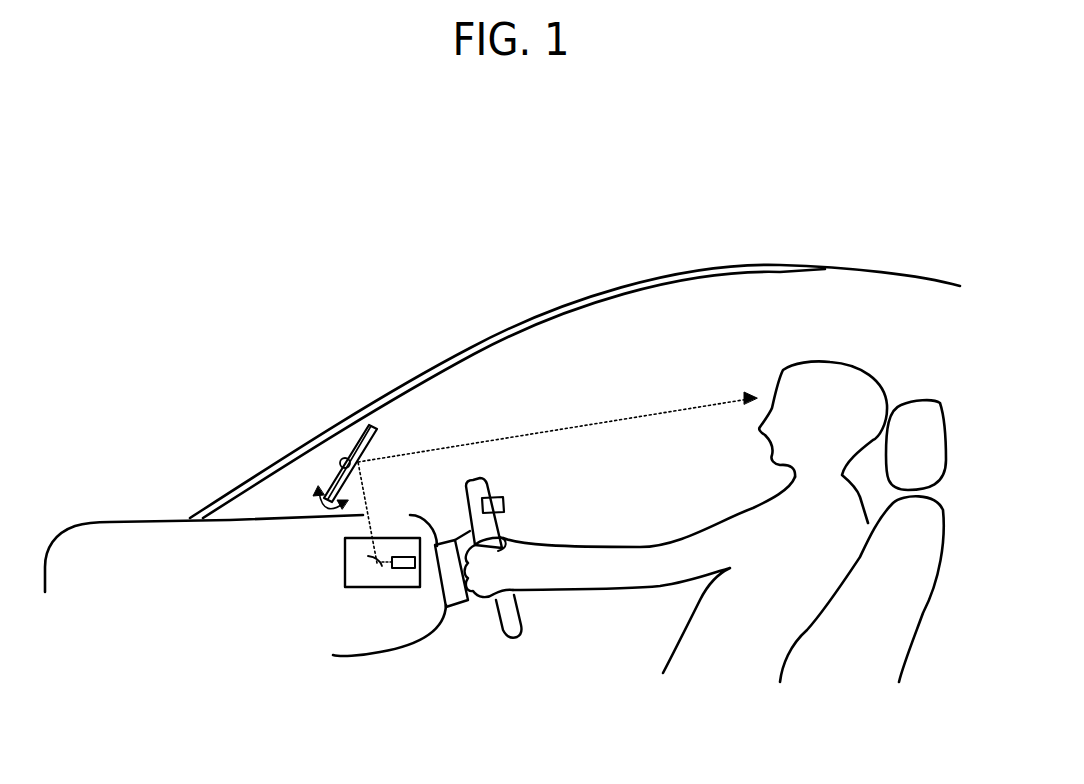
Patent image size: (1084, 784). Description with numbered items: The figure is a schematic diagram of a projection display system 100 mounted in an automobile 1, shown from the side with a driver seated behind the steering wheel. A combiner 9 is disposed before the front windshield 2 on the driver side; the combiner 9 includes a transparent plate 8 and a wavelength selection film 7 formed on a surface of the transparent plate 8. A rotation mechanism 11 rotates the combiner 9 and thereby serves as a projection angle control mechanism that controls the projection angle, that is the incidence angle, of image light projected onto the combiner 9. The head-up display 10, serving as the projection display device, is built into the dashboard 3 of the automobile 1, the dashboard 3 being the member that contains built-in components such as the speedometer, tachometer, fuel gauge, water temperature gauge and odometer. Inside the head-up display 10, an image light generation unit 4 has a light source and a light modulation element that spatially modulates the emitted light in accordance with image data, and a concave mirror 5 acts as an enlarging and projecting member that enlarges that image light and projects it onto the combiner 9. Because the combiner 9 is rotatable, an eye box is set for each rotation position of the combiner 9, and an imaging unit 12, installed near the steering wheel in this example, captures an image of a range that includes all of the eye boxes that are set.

The automobile 1 is at (740, 263).
The front windshield 2 is at (553, 308).
The projection display system 100 is at (393, 484).
The dashboard 3 is at (437, 627).
The image light generation unit 4 is at (398, 568).
The concave mirror 5 is at (368, 563).
The wavelength selection film 7 is at (368, 455).
The transparent plate 8 is at (367, 443).
The combiner 9 is at (403, 323).
The head-up display 10 is at (380, 587).
The rotation mechanism 11 is at (343, 459).
The imaging unit 12 is at (505, 503).